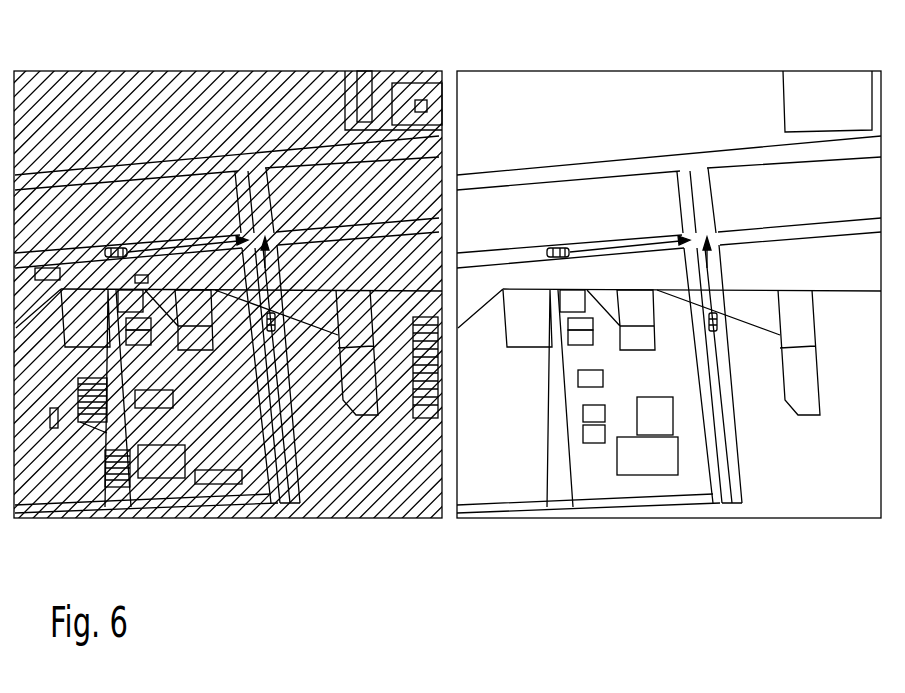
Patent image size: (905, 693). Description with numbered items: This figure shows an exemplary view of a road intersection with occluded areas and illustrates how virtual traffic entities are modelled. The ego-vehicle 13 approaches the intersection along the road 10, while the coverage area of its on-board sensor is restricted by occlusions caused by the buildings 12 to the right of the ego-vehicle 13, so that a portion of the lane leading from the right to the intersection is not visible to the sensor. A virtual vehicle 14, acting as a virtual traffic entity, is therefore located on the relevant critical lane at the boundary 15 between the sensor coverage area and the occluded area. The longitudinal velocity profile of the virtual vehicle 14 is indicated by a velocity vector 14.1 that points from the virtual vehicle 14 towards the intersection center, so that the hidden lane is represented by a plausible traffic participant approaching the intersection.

The road 10 is at (731, 518).
The buildings 12 is at (808, 417).
The ego-vehicle 13 is at (557, 248).
The virtual vehicle 14 is at (720, 327).
The velocity vector 14.1 is at (711, 268).
The boundary 15 is at (852, 293).